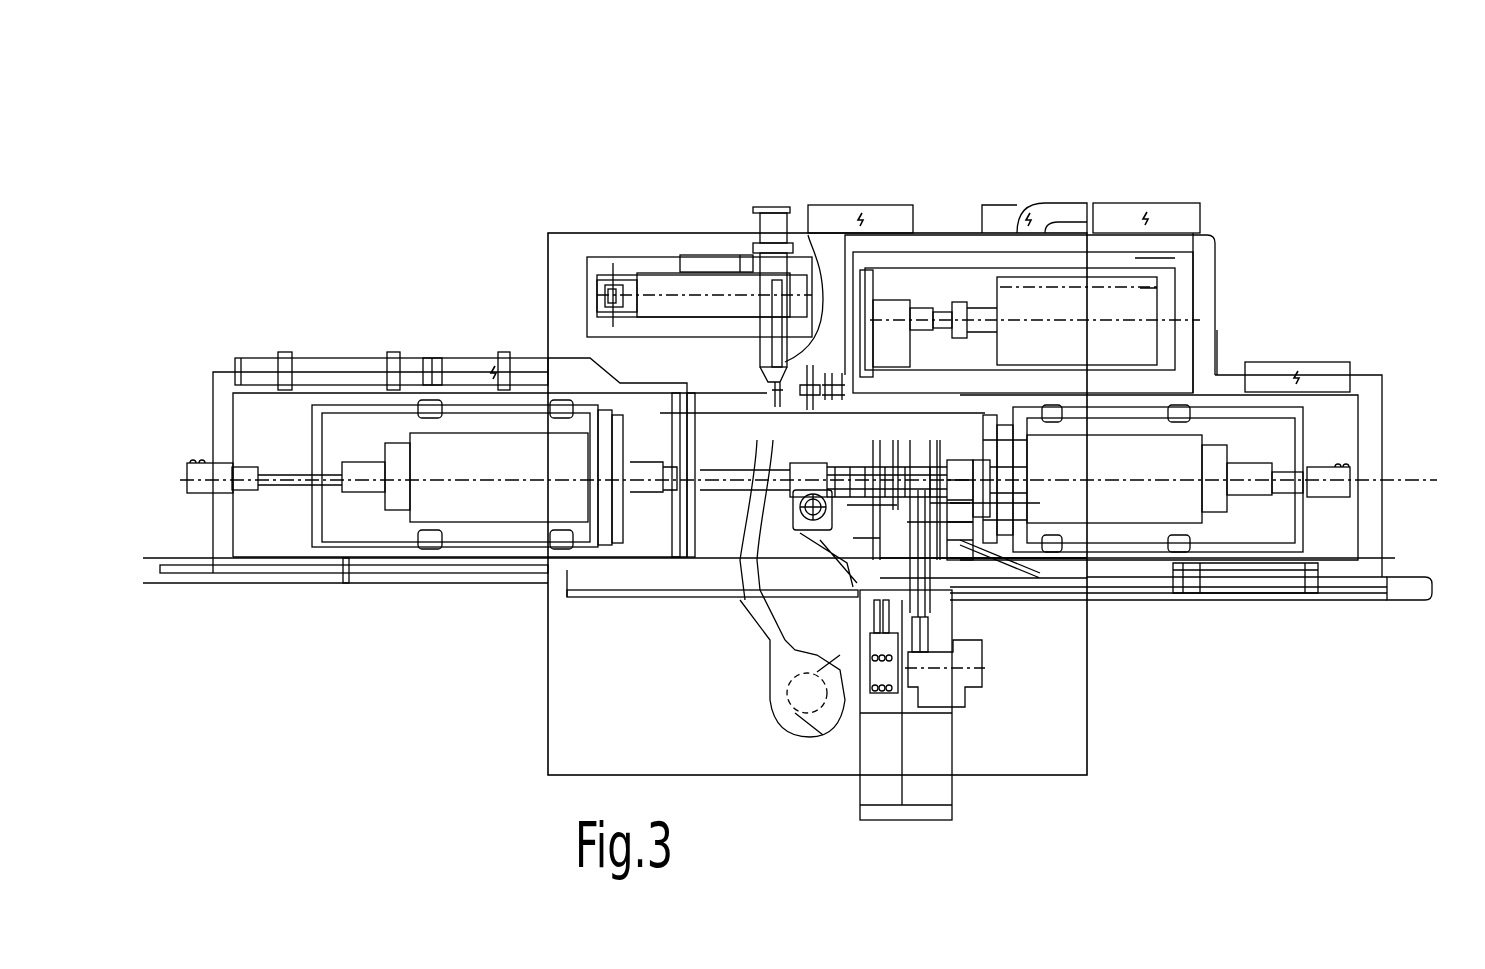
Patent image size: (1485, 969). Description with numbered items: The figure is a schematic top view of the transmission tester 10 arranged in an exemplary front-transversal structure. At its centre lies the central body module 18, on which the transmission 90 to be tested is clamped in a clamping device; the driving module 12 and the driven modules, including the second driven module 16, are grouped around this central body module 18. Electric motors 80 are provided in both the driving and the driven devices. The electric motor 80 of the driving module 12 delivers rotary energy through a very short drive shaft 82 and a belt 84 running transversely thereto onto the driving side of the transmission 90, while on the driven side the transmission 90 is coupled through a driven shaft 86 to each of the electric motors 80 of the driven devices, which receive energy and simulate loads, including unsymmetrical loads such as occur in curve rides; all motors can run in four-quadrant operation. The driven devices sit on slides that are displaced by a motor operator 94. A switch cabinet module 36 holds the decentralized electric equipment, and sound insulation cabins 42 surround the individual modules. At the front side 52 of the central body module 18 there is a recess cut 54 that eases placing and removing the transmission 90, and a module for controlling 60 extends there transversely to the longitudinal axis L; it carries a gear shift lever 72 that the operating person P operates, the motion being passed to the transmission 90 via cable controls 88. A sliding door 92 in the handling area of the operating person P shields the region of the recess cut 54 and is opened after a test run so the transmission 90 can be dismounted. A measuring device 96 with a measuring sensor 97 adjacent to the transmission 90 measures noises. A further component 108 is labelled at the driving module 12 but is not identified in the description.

The transmission tester 10 is at (1257, 185).
The driving module 12 is at (1200, 272).
The second driven module 16 is at (307, 508).
The central body module 18 is at (610, 380).
The switch cabinet module 36 is at (460, 358).
The sound insulation cabins 42 is at (225, 412).
The front side 52 is at (927, 598).
The recess cut 54 is at (738, 577).
The module for controlling 60 is at (953, 745).
The gear shift lever 72 is at (887, 697).
The electric motor 80 is at (512, 495).
The drive shaft 82 is at (942, 300).
The belt 84 is at (924, 305).
The driven shaft 86 is at (712, 478).
The cable controls 88 is at (780, 570).
The transmission 90 is at (778, 413).
The sliding door 92 is at (612, 600).
The motor operator 94 is at (197, 475).
The measuring device 96 is at (657, 257).
The measuring sensor 97 is at (808, 235).
The housing 108 is at (1217, 312).
The operating person P is at (775, 693).
The longitudinal axis L is at (817, 481).